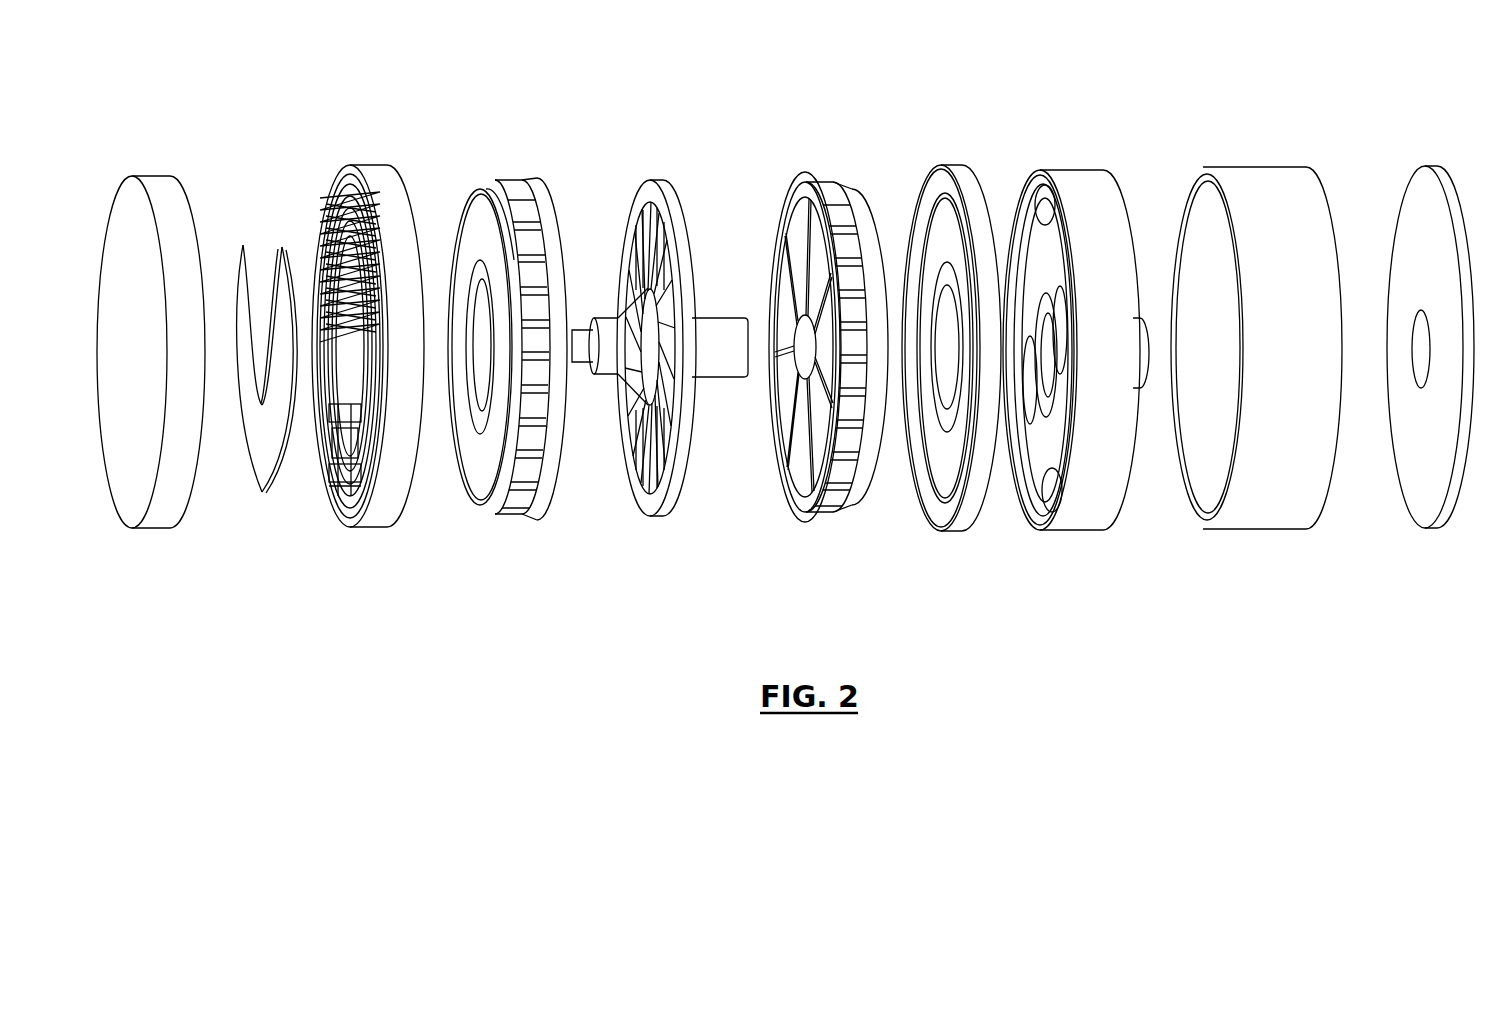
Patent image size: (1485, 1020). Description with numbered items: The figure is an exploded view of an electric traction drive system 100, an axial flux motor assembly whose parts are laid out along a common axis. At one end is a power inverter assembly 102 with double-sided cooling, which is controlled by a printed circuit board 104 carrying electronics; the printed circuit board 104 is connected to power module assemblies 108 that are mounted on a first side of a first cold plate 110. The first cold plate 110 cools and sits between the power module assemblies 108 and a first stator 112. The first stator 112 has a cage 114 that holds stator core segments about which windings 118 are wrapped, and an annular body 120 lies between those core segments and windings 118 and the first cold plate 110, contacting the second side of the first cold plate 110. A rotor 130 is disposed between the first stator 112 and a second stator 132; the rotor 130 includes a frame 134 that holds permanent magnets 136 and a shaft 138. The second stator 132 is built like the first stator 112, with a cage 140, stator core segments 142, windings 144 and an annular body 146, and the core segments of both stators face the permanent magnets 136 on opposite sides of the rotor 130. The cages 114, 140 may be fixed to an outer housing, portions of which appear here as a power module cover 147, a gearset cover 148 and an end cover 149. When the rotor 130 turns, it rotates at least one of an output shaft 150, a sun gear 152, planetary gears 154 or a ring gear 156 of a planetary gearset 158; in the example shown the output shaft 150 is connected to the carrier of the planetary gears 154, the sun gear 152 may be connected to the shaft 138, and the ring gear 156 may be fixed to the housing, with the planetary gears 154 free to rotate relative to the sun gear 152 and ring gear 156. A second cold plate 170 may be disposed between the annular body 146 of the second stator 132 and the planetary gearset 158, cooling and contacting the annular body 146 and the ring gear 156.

The electric traction drive system 100 is at (256, 56).
The power inverter assembly 102 is at (286, 146).
The printed circuit board 104 is at (263, 478).
The power module assemblies 108 is at (358, 255).
The first cold plate 110 is at (357, 362).
The first stator 112 is at (518, 336).
The cage 114 is at (535, 302).
The windings 118 is at (524, 190).
The annular body 120 is at (497, 198).
The rotor 130 is at (668, 336).
The second stator 132 is at (807, 333).
The frame 134 is at (672, 200).
The permanent magnets 136 is at (648, 196).
The shaft 138 is at (718, 318).
The cage 140 is at (818, 185).
The stator core segments 142 is at (795, 486).
The windings 144 is at (838, 193).
The annular body 146 is at (863, 212).
The power module cover 147 is at (168, 181).
The gearset cover 148 is at (1263, 182).
The end cover 149 is at (1420, 185).
The output shaft 150 is at (1140, 320).
The sun gear 152 is at (1068, 375).
The planetary gears 154 is at (1038, 252).
The ring gear 156 is at (1087, 190).
The planetary gearset 158 is at (1085, 345).
The second cold plate 170 is at (965, 185).